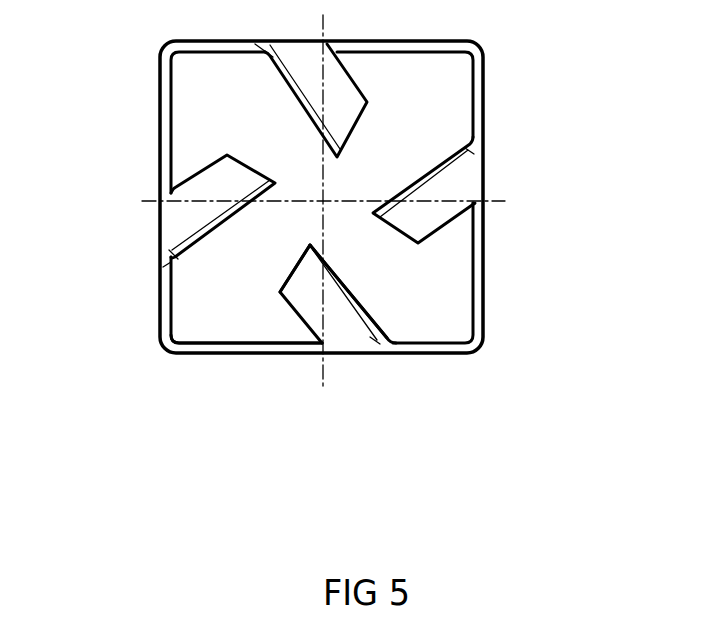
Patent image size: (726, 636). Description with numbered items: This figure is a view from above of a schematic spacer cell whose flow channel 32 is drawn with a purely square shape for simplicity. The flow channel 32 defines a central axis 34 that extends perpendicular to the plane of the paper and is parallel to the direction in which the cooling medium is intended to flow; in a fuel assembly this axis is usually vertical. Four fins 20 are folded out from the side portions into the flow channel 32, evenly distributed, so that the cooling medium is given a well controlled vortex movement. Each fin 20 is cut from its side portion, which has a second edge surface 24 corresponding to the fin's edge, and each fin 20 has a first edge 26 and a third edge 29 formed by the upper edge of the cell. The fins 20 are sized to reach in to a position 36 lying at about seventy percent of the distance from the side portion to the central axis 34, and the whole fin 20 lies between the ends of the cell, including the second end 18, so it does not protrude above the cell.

The second end of the cell 18 is at (483, 310).
The fin 20 is at (215, 175).
The second edge surface 24 is at (257, 348).
The first edge of the fin 26 is at (290, 272).
The third edge of the fin 29 is at (353, 303).
The flow channel 32 is at (412, 97).
The central axis 34 is at (340, 190).
The position reached by the fin 36 is at (323, 245).